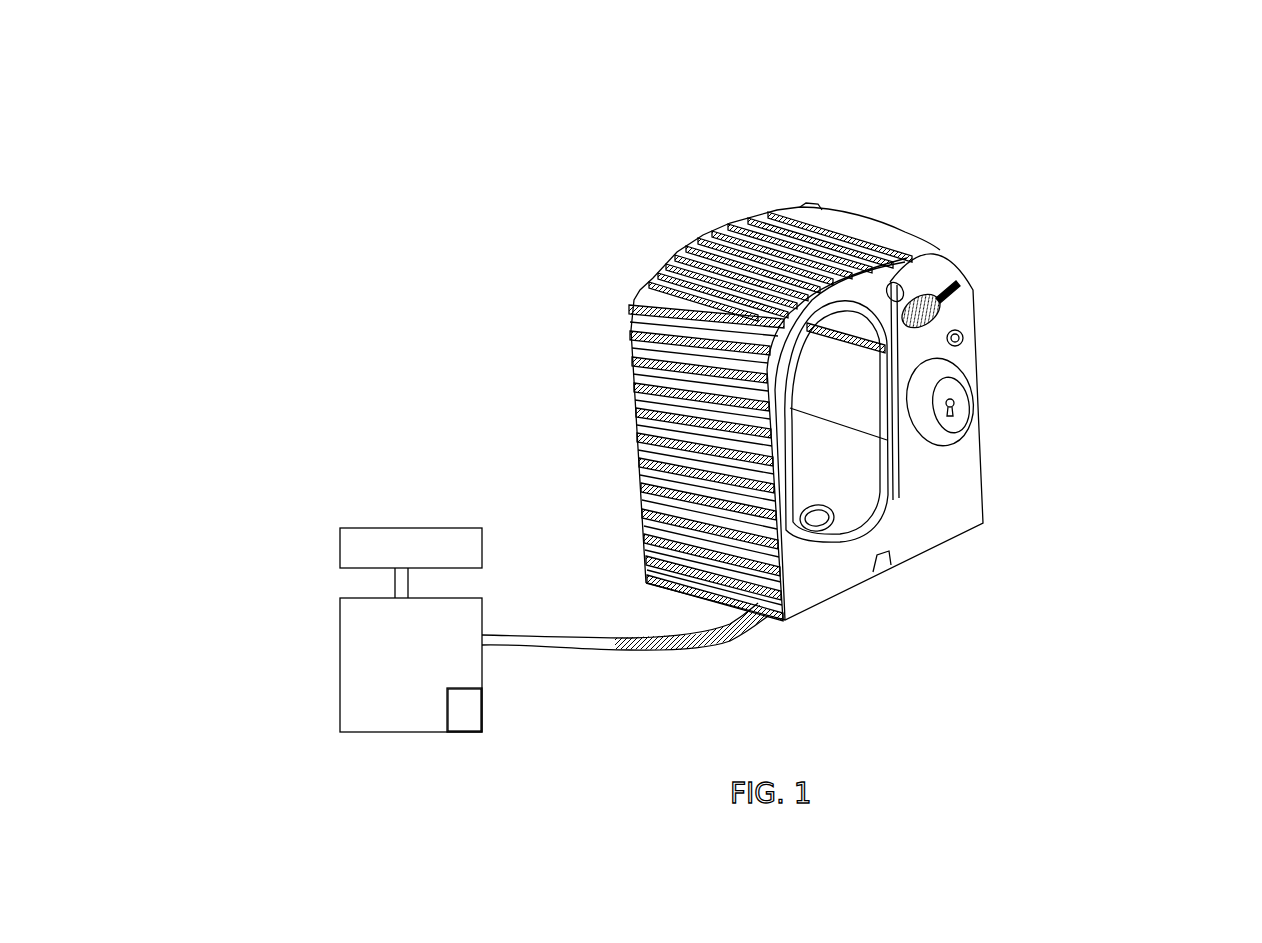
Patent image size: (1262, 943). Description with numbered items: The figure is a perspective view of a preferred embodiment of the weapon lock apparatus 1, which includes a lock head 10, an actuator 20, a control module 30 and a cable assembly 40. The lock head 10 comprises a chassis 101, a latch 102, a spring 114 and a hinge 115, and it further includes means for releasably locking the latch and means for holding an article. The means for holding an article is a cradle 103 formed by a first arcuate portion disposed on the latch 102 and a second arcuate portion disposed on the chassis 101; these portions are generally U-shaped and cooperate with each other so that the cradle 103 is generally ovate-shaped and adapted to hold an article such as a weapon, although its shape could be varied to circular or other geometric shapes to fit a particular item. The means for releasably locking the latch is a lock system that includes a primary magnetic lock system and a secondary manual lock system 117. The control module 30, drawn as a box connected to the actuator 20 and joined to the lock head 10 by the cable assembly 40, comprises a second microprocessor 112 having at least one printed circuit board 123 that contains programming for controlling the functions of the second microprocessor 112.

The weapon lock apparatus 1 is at (338, 234).
The lock head 10 is at (983, 450).
The chassis 101 is at (983, 522).
The latch 102 is at (682, 267).
The cradle 103 is at (820, 458).
The spring 114 is at (945, 318).
The hinge 115 is at (968, 287).
The secondary manual lock system 117 is at (976, 370).
The actuator 20 is at (338, 558).
The control module 30 is at (372, 730).
The cable assembly 40 is at (613, 650).
The second microprocessor 112 is at (463, 717).
The printed circuit board 123 is at (490, 767).